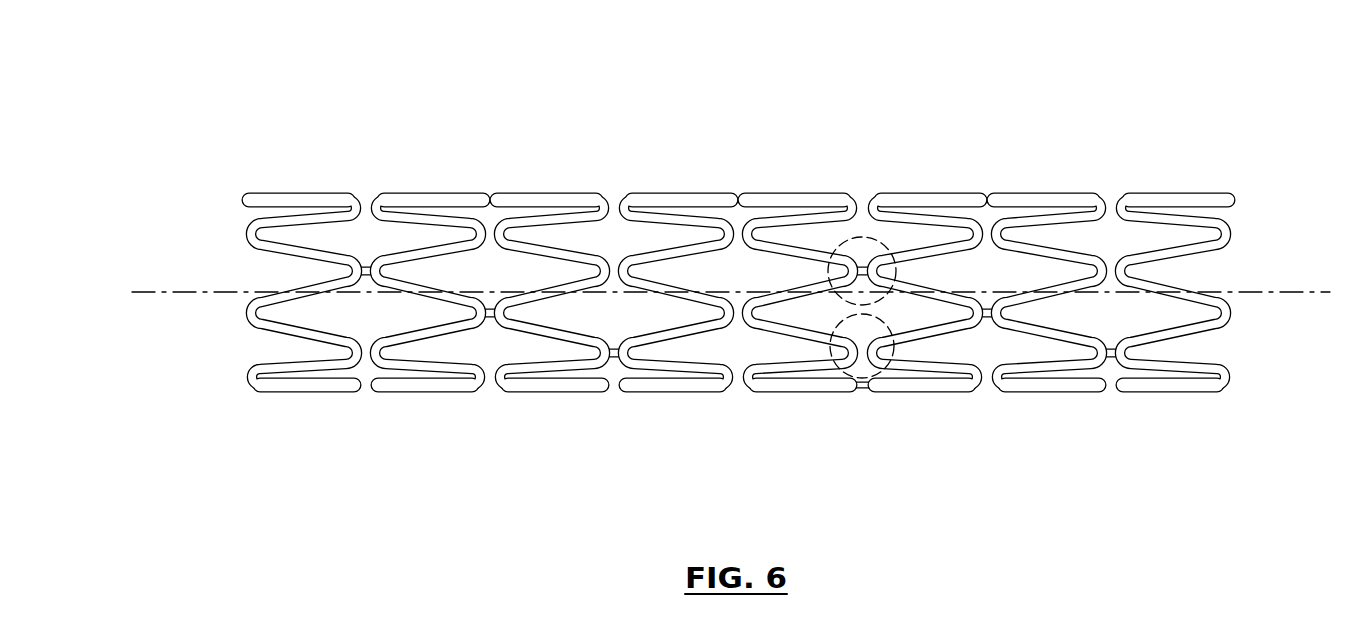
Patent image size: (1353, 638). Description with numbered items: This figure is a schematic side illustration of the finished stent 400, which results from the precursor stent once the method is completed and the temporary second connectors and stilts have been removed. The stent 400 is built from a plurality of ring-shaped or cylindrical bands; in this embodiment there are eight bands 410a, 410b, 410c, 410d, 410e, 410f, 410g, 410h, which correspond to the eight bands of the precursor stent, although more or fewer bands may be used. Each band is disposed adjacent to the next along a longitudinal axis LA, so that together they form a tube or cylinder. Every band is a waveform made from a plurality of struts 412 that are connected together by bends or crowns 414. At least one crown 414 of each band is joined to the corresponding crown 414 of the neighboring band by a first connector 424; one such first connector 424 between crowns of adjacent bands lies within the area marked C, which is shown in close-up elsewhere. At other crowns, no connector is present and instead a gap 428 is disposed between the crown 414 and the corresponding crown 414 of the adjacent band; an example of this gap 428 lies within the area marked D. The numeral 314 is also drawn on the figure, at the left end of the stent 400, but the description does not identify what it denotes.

The stent 400 is at (671, 265).
The band 410a is at (293, 162).
The band 410b is at (441, 162).
The band 410c is at (551, 162).
The band 410d is at (666, 417).
The band 410e is at (783, 420).
The band 410f is at (970, 162).
The band 410g is at (1041, 417).
The band 410h is at (1208, 417).
The strut 412 is at (656, 255).
The crown 414 is at (727, 232).
The first connector 424 is at (364, 268).
The gap 428 is at (862, 388).
The marker 314 is at (242, 314).
The area C is at (880, 236).
The area D is at (890, 362).
The longitudinal axis LA is at (1295, 291).